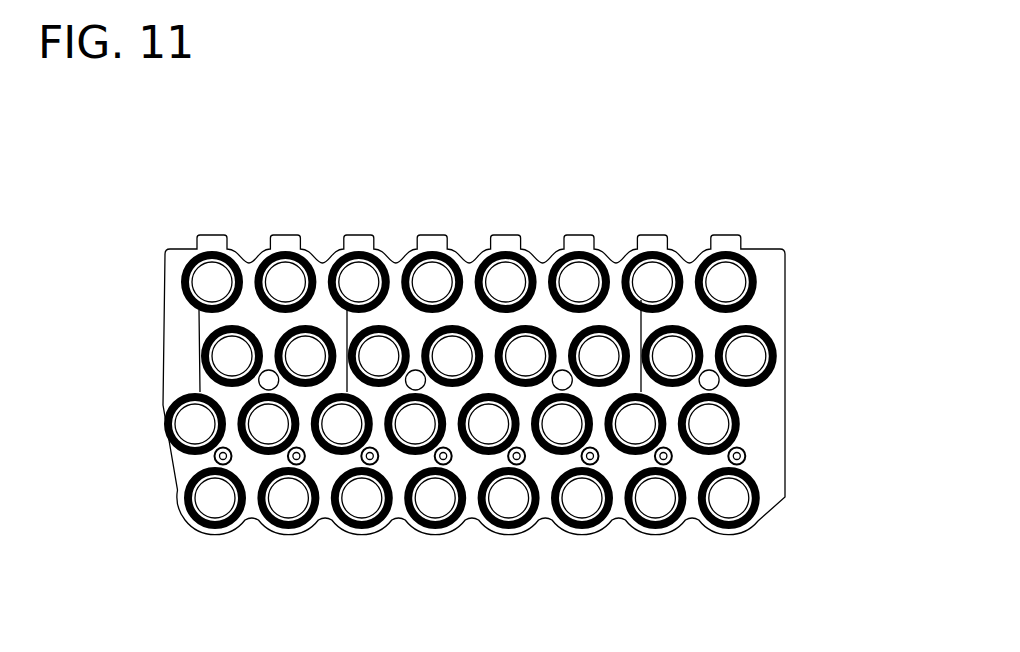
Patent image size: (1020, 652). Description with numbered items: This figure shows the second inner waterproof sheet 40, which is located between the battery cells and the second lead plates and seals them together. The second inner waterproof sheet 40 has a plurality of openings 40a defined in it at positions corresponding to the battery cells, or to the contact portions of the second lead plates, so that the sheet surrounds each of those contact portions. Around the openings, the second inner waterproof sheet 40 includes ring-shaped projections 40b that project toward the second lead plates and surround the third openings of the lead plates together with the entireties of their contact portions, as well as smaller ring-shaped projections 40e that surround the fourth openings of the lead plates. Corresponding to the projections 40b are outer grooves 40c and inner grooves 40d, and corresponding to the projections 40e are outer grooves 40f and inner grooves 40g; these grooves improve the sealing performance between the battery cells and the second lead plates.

The second inner waterproof sheet 40 is at (790, 142).
The openings 40a is at (645, 298).
The ring-shaped projections 40b is at (641, 300).
The outer grooves 40c is at (700, 303).
The inner grooves 40d is at (700, 303).
The ring-shaped projections 40e is at (746, 454).
The outer grooves 40f is at (733, 450).
The inner grooves 40g is at (727, 467).